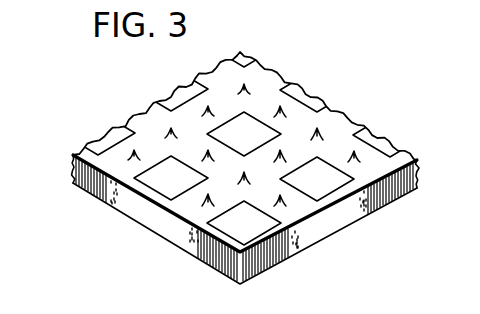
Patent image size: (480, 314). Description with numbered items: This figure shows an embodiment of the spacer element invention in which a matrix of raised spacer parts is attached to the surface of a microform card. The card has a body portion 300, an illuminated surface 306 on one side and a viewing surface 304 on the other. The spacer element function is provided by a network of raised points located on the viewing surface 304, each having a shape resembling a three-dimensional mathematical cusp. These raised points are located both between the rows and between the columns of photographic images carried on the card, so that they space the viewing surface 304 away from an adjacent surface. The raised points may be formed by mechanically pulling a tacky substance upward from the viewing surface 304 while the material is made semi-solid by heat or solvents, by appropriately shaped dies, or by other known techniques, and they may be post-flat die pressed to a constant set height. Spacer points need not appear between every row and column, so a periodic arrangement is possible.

The body portion 300 is at (143, 212).
The viewing surface 304 is at (343, 123).
The illuminated surface 306 is at (180, 243).